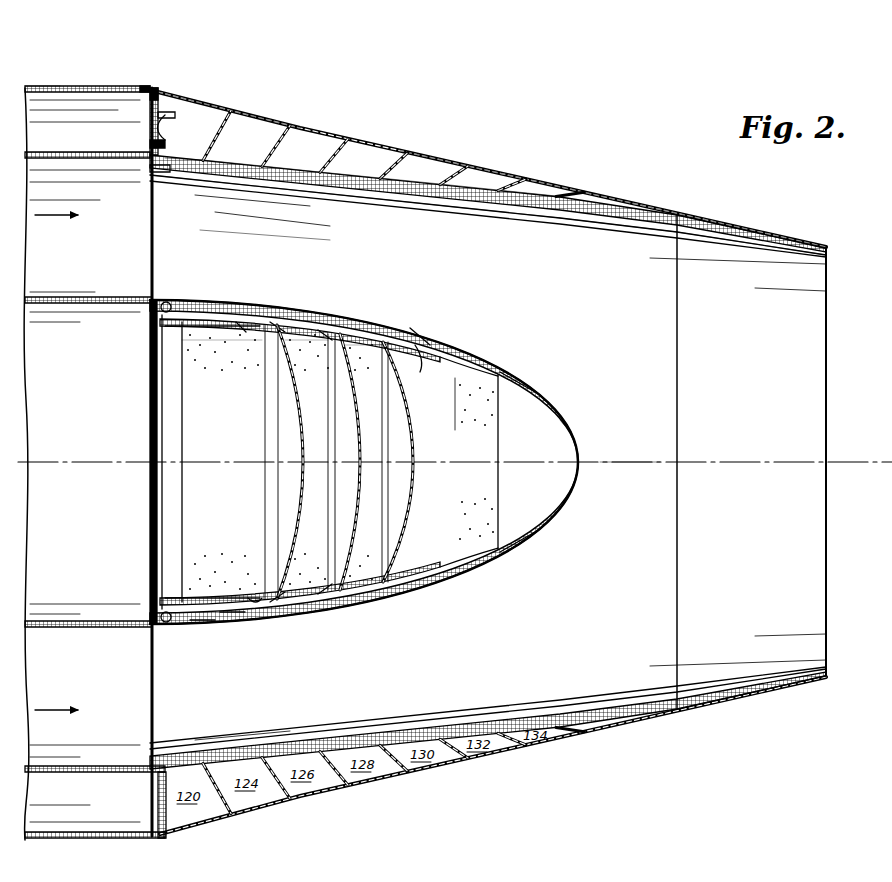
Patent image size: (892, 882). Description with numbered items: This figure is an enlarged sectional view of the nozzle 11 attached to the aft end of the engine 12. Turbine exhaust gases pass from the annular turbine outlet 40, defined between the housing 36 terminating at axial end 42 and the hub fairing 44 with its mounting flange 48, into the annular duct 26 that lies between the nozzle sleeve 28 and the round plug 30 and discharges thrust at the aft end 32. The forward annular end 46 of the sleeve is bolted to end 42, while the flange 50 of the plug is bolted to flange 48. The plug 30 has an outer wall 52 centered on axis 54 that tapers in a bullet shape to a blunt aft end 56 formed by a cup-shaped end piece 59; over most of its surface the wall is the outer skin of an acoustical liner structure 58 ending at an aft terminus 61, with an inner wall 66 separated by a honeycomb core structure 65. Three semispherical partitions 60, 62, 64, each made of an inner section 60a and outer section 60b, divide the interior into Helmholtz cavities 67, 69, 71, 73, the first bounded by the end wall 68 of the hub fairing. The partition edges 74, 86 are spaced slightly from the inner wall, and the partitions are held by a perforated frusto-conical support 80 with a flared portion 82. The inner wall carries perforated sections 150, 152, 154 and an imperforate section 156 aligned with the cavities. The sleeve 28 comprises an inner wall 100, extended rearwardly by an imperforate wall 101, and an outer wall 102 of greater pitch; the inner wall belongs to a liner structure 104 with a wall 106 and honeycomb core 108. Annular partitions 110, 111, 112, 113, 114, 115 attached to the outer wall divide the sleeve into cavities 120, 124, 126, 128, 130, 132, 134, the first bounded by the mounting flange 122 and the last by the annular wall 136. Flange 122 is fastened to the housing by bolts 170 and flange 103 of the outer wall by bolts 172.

The nozzle 11 is at (527, 118).
The engine 12 is at (44, 76).
The duct 26 is at (266, 248).
The nozzle sleeve 28 is at (358, 133).
The plug 30 is at (500, 356).
The aft end of sleeve 32 is at (826, 247).
The housing of turbine stage 36 is at (62, 88).
The annular turbine outlet 40 is at (123, 248).
The axial end of housing 42 is at (150, 143).
The hub fairing 44 is at (105, 298).
The forward annular end of sleeve 46 is at (150, 170).
The mounting flange 48 is at (185, 310).
The flange of plug 50 is at (160, 300).
The outer wall of plug 52 is at (355, 318).
The axis 54 is at (632, 462).
The blunt aft end of plug 56 is at (574, 492).
The acoustical liner structure 58 is at (412, 332).
The cup-shaped metal end piece 59 is at (568, 432).
The forward partition 60 is at (296, 487).
The inner section of partition 60a is at (278, 322).
The outer section of partition 60b is at (283, 608).
The aft terminus of liner structure 61 is at (520, 383).
The partition 62 is at (352, 501).
The partition 64 is at (404, 513).
The core structure 65 is at (372, 320).
The inner wall of liner structure 66 is at (322, 325).
The first Helmholtz cavity 67 is at (235, 428).
The end wall of hub fairing 68 is at (147, 397).
The Helmholtz cavity 69 is at (323, 390).
The Helmholtz cavity 71 is at (381, 395).
The Helmholtz cavity 73 is at (466, 442).
The edge of partition 74 is at (242, 318).
The frusto-conical support 80 is at (232, 618).
The flared portion of support 82 is at (200, 625).
The edge of partition 86 is at (256, 600).
The inner wall of sleeve 100 is at (583, 223).
The imperforate wall 101 is at (752, 250).
The outer wall of sleeve 102 is at (490, 168).
The flange 103 is at (150, 90).
The acoustical liner structure 104 is at (482, 212).
The wall 106 is at (345, 170).
The core structure 108 is at (418, 200).
The partition 110 is at (232, 118).
The partition 111 is at (280, 130).
The partition 112 is at (325, 138).
The partition 113 is at (390, 150).
The partition 114 is at (455, 165).
The partition 115 is at (515, 182).
The first sound absorbing cavity 120 is at (197, 137).
The annular mounting flange 122 is at (175, 120).
The sound absorbing cavity 124 is at (255, 148).
The sound absorbing cavity 126 is at (311, 157).
The sound absorbing cavity 128 is at (371, 167).
The sound absorbing cavity 130 is at (431, 177).
The sound absorbing cavity 132 is at (487, 187).
The aft cavity 134 is at (527, 188).
The annular wall 136 is at (675, 215).
The perforated section 150 is at (223, 462).
The perforated section 152 is at (331, 459).
The perforated section 154 is at (474, 459).
The imperforate section 156 is at (420, 372).
The bolts 170 is at (165, 125).
The bolts 172 is at (158, 88).